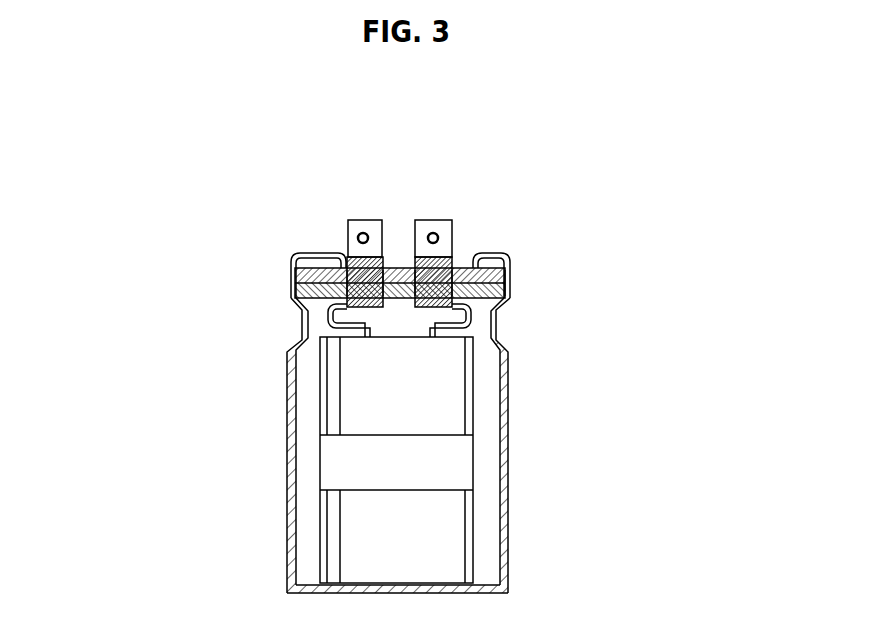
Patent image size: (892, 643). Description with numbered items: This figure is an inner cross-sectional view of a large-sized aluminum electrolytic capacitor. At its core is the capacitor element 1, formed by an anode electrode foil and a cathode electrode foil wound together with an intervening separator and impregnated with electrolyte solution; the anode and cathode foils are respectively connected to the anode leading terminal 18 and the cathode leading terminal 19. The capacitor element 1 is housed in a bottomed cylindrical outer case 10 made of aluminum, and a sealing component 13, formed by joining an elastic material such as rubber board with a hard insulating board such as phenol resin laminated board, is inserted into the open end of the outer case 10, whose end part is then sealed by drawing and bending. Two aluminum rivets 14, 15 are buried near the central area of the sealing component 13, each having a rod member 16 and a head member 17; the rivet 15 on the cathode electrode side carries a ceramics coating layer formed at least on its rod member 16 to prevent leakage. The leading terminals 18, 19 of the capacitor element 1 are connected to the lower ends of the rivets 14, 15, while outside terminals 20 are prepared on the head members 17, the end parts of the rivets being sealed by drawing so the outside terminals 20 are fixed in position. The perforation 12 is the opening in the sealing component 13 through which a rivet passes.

The capacitor element 1 is at (455, 383).
The outer case 10 is at (503, 502).
The perforation 12 is at (510, 289).
The sealing component 13 is at (508, 270).
The rivet 14 is at (455, 263).
The rivet 15 is at (346, 263).
The rod member 16 is at (297, 277).
The head member 17 is at (347, 255).
The anode leading terminal 18 is at (498, 327).
The cathode leading terminal 19 is at (300, 313).
The outside terminal 20 is at (347, 222).